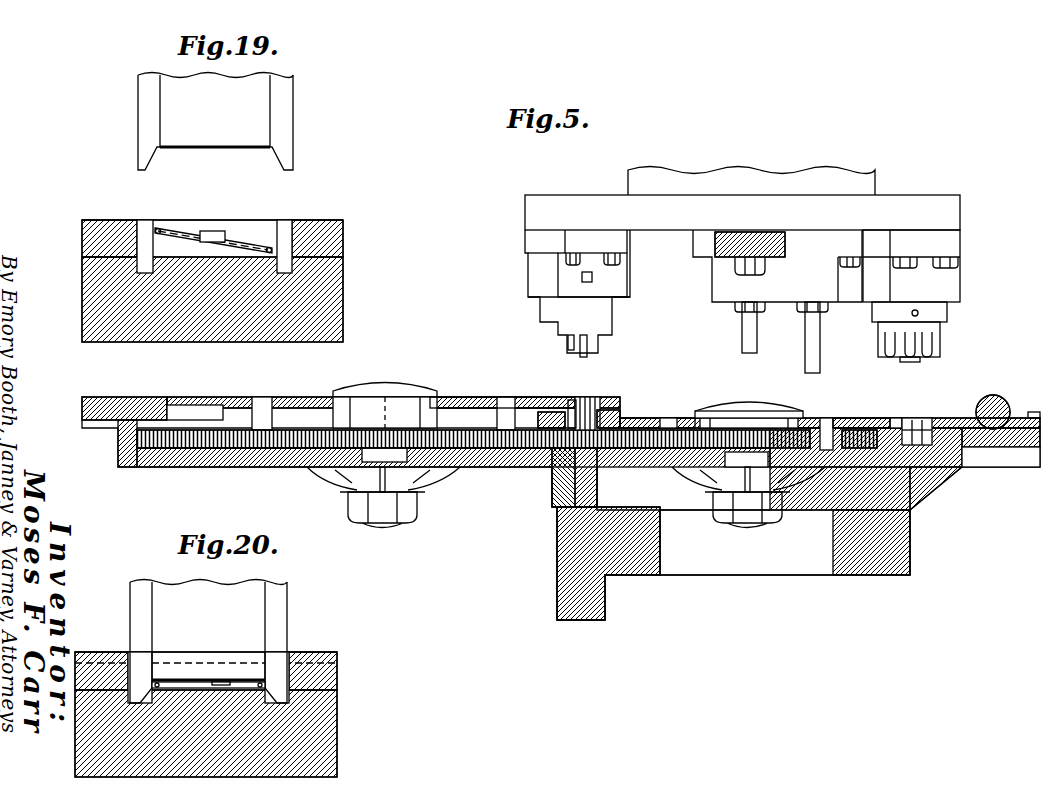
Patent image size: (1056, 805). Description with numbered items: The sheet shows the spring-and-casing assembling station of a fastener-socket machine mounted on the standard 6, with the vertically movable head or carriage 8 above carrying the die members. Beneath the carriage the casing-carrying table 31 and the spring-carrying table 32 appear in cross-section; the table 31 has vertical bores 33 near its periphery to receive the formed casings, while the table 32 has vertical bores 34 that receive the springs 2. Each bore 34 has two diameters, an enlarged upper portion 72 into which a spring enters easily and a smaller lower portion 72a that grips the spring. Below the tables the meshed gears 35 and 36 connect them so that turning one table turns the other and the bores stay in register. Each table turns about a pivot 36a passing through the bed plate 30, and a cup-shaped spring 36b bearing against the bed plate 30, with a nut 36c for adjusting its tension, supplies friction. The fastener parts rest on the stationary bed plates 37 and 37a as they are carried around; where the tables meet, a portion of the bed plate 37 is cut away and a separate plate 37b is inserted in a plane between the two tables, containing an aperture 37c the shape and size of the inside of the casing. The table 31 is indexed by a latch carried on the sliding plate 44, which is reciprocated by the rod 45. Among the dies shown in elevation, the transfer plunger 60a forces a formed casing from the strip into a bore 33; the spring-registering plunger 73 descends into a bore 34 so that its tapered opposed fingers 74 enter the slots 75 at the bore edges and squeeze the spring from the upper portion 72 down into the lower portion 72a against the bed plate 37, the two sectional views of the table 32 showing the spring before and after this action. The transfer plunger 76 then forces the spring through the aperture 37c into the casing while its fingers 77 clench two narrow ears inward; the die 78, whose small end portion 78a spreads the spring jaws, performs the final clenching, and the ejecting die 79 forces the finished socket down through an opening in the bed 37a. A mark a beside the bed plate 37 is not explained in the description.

In FIG. 19, the spring 2 is at (160, 228).
In FIG. 20, the spring 2 is at (183, 684).
In FIG. 5, the standard 6 is at (600, 600).
In FIG. 5, the head or carriage 8 is at (898, 201).
In FIG. 5, the bed plate 30 is at (160, 467).
In FIG. 5, the casing-carrying table 31 is at (817, 403).
In FIG. 19, the spring-carrying table 32 is at (82, 228).
In FIG. 20, the spring-carrying table 32 is at (332, 672).
In FIG. 5, the spring-carrying table 32 is at (300, 398).
In FIG. 5, the vertical bores 33 is at (908, 420).
In FIG. 5, the vertical bores 34 is at (598, 399).
In FIG. 5, the gear 35 is at (185, 450).
In FIG. 5, the gear 36 is at (858, 413).
In FIG. 5, the pivot 36a is at (347, 476).
In FIG. 5, the cup-shaped spring 36b is at (440, 473).
In FIG. 5, the nut 36c is at (385, 514).
In FIG. 19, the bed plate 37 is at (335, 295).
In FIG. 20, the bed plate 37 is at (333, 748).
In FIG. 5, the bed plate 37 is at (165, 398).
In FIG. 5, the bed plate 37a is at (541, 470).
In FIG. 5, the plate 37b is at (648, 413).
In FIG. 5, the aperture 37c is at (555, 399).
In FIG. 5, the sliding plate 44 is at (992, 468).
In FIG. 5, the rod 45 is at (1004, 405).
In FIG. 5, the transfer die or plunger 60a is at (742, 336).
In FIG. 19, the upper portion 72 is at (258, 224).
In FIG. 5, the upper portion 72 is at (573, 399).
In FIG. 19, the lower portion 72a is at (260, 240).
In FIG. 5, the lower portion 72a is at (618, 410).
In FIG. 19, the plunger 73 is at (262, 106).
In FIG. 20, the plunger 73 is at (240, 597).
In FIG. 5, the plunger 73 is at (560, 331).
In FIG. 19, the fingers 74 is at (140, 147).
In FIG. 20, the fingers 74 is at (140, 604).
In FIG. 5, the fingers 74 is at (570, 352).
In FIG. 19, the slots 75 is at (143, 226).
In FIG. 20, the slots 75 is at (293, 660).
In FIG. 5, the transfer plunger 76 is at (600, 332).
In FIG. 5, the fingers 77 is at (578, 400).
In FIG. 5, the die 78 is at (878, 340).
In FIG. 5, the small end portion 78a is at (907, 363).
In FIG. 5, the ejecting die 79 is at (806, 366).
In FIG. 5, the point a is at (967, 393).